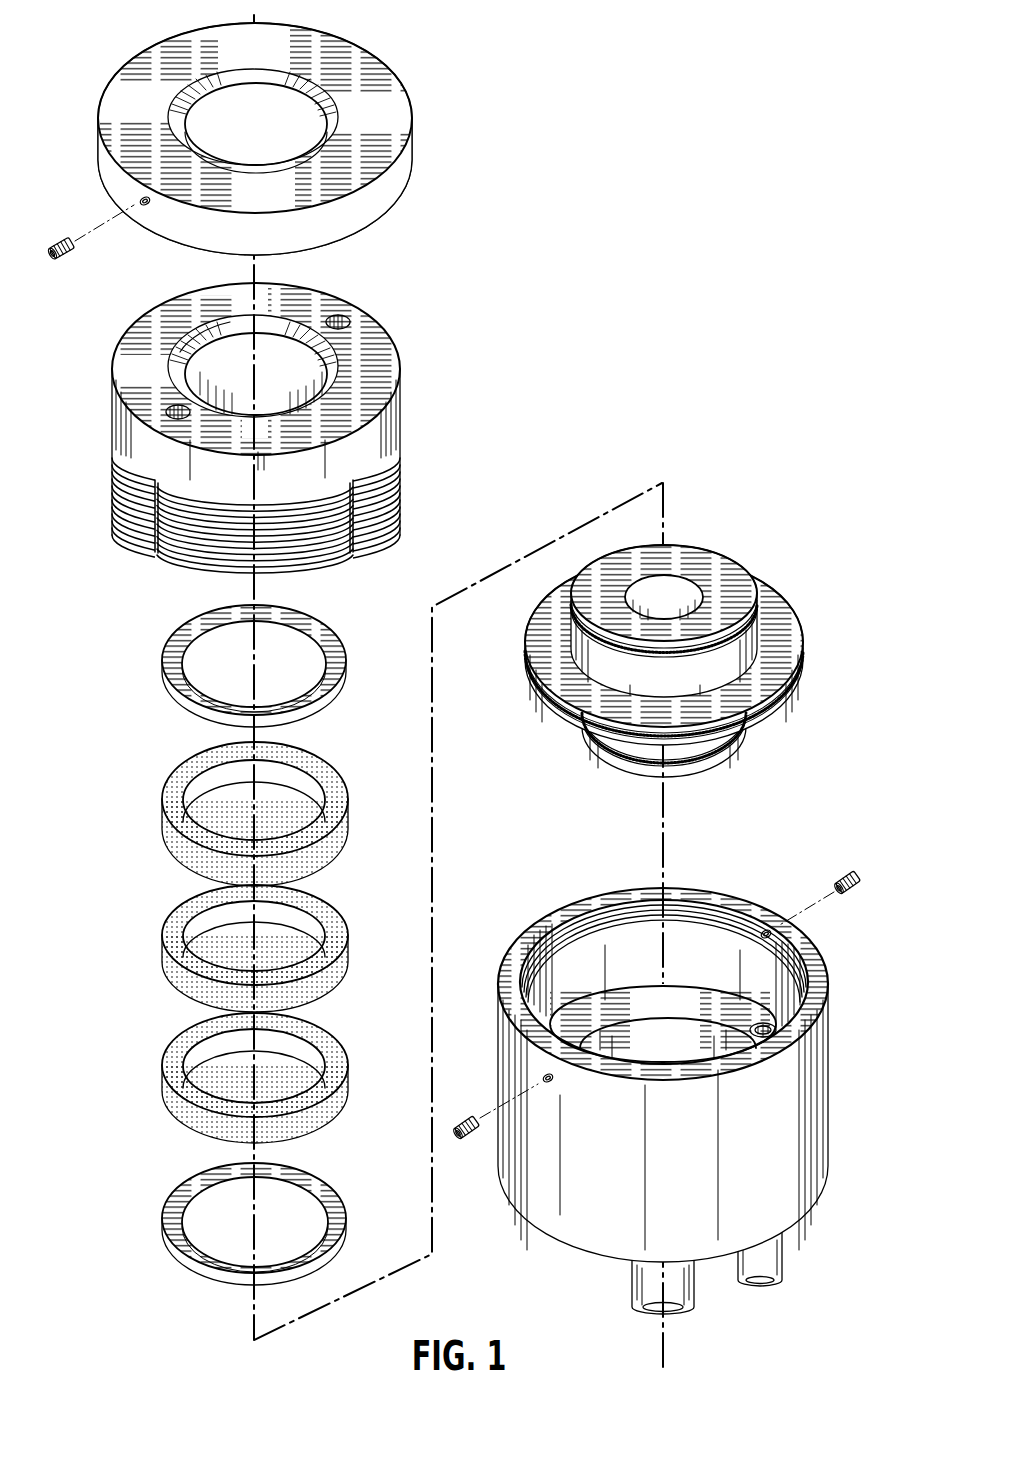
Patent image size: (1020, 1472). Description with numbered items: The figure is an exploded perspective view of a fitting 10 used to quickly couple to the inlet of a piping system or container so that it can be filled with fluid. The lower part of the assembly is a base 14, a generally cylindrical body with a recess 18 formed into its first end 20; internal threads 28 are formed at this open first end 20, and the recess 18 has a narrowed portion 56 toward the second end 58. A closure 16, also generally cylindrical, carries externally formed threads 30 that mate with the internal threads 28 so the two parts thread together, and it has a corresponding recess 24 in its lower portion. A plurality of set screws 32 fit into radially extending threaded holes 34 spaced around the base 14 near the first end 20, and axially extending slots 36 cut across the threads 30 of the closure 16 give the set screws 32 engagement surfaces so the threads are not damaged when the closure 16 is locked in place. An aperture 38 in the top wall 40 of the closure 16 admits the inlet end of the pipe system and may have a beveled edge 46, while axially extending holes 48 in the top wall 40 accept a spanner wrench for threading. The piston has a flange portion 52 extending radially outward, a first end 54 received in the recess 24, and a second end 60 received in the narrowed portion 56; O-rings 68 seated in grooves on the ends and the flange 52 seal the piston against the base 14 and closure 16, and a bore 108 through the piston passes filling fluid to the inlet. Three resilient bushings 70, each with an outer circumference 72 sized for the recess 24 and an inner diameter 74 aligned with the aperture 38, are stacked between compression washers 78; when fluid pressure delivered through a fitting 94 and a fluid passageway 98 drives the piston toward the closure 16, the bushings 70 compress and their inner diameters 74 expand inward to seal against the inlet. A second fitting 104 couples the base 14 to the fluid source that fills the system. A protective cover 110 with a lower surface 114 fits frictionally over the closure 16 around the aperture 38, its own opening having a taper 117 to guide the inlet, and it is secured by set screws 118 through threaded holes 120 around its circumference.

The fitting 10 is at (465, 693).
The base 14 is at (668, 1068).
The closure 16 is at (257, 419).
The recess 18 is at (664, 947).
The first end 20 is at (832, 1006).
The recess 24 is at (300, 356).
The internal threads 28 is at (586, 920).
The externally formed threads 30 is at (279, 476).
The set screws 32 is at (846, 870).
The threaded holes 34 is at (767, 929).
The slots 36 is at (155, 550).
The aperture 38 is at (252, 371).
The top wall 40 is at (185, 310).
The beveled edge 46 is at (165, 360).
The axially extending holes 48 is at (340, 313).
The flange portion 52 is at (665, 655).
The first end 54 is at (682, 600).
The narrowed portion 56 is at (625, 1040).
The second end 58 is at (832, 1181).
The second end 60 is at (722, 762).
The O-rings 68 is at (745, 628).
The resilient bushings 70 is at (248, 937).
The outer circumference 72 is at (172, 862).
The inner diameters 74 is at (312, 778).
The compression washers 78 is at (163, 663).
The fitting 94 is at (786, 1275).
The fluid passageway 98 is at (763, 1026).
The fitting 104 is at (630, 1297).
The bore 108 is at (676, 590).
The protective cover 110 is at (470, 312).
The lower surface 114 is at (387, 206).
The taper 117 is at (236, 78).
The set screws 118 is at (67, 256).
The threaded holes 120 is at (134, 201).